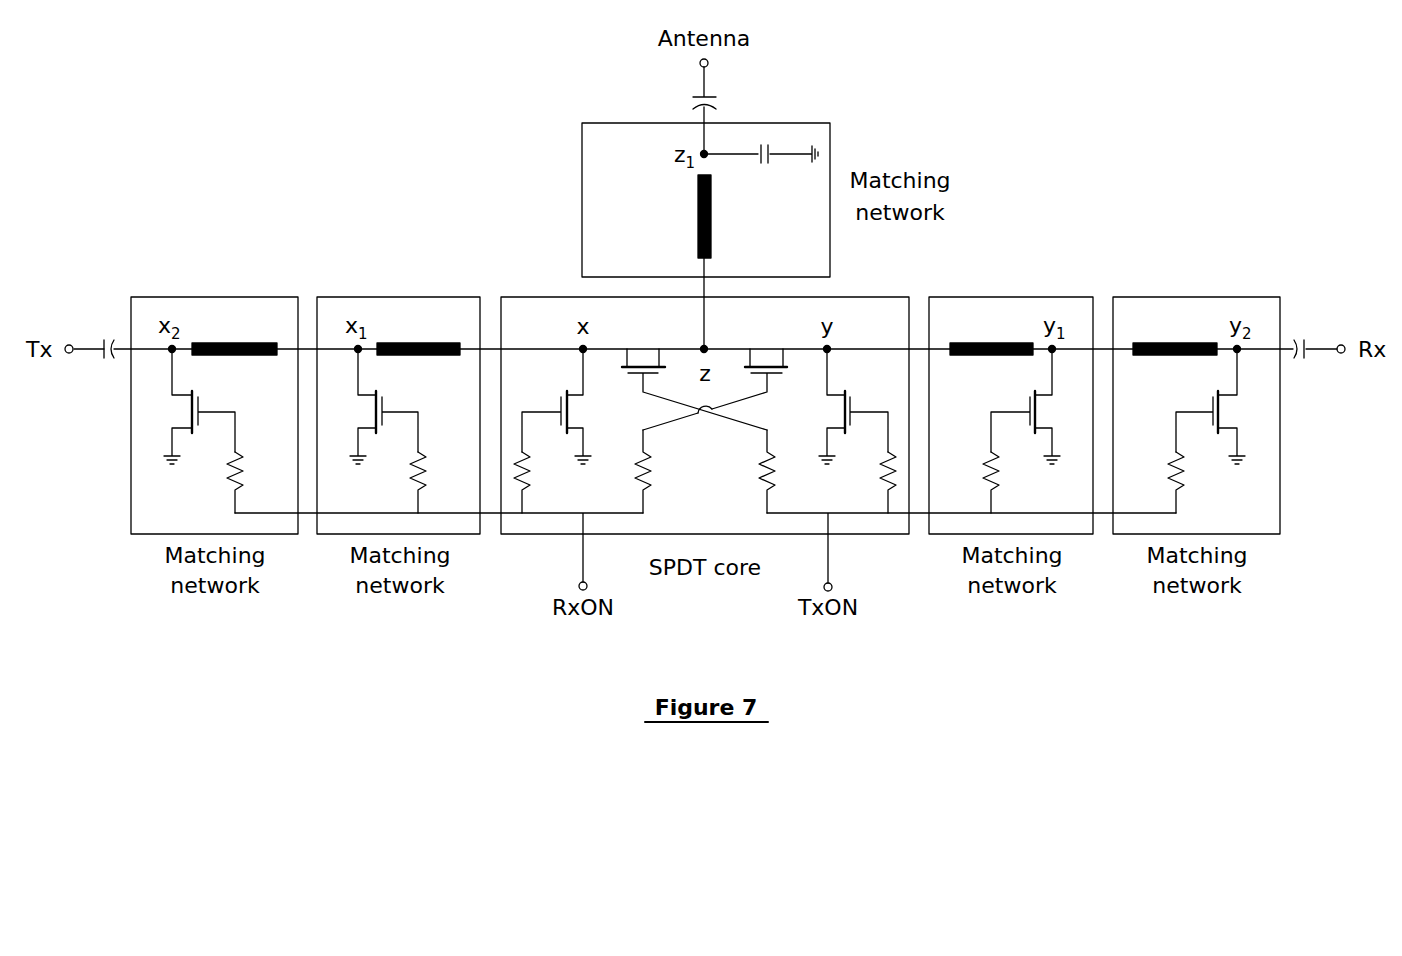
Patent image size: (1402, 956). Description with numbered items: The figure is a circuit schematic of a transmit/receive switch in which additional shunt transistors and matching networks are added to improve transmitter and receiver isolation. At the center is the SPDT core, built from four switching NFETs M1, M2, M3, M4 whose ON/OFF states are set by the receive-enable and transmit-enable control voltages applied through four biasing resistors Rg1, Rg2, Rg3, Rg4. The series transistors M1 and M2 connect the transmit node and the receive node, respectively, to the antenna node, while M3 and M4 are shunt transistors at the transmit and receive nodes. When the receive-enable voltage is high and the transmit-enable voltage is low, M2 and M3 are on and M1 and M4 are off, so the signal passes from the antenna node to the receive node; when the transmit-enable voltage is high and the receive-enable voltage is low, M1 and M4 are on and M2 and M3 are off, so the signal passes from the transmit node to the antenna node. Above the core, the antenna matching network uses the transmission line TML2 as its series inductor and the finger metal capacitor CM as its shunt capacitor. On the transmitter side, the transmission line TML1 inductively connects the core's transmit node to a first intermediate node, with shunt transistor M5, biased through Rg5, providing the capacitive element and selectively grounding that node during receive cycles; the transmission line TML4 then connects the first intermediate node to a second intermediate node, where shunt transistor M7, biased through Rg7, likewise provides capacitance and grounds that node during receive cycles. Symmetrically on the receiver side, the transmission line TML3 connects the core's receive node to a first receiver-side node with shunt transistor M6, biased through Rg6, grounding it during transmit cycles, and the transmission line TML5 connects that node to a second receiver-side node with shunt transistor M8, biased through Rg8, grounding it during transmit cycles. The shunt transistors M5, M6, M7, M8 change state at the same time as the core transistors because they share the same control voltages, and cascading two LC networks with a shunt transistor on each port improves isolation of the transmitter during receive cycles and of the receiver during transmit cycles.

The switching NFET M1 is at (694, 371).
The switching NFET M2 is at (715, 371).
The switching NFET M3 is at (570, 406).
The switching NFET M4 is at (839, 406).
The shunt transistor M5 is at (369, 406).
The shunt transistor M6 is at (1039, 406).
The shunt transistor M7 is at (186, 406).
The shunt transistor M8 is at (1224, 406).
The biasing resistor Rg1 is at (663, 471).
The biasing resistor Rg2 is at (746, 471).
The biasing resistor Rg3 is at (543, 482).
The biasing resistor Rg4 is at (868, 482).
The biasing resistor Rg5 is at (440, 482).
The biasing resistor Rg6 is at (1012, 482).
The biasing resistor Rg7 is at (256, 482).
The biasing resistor Rg8 is at (1196, 482).
The transmission line TML1 is at (418, 333).
The transmission line TML2 is at (665, 216).
The transmission line TML3 is at (991, 333).
The transmission line TML4 is at (234, 333).
The transmission line TML5 is at (1175, 333).
The finger metal capacitor CM is at (761, 177).